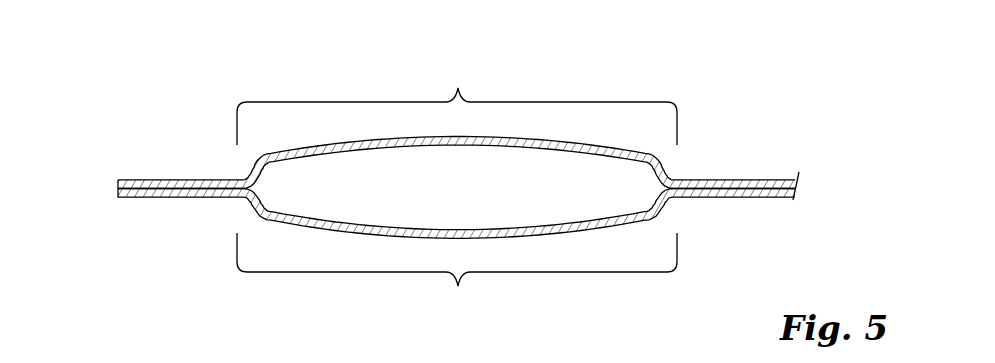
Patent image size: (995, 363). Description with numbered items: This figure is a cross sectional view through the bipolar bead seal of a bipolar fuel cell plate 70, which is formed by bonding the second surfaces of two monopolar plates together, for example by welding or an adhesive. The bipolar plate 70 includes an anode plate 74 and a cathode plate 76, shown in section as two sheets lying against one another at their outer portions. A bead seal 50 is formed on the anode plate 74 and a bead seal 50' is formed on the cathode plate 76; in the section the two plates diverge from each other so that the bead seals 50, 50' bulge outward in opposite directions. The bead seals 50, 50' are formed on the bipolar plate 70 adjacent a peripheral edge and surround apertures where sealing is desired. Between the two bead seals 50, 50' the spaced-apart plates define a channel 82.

The bipolar fuel cell plate 70 is at (167, 110).
The anode plate 74 is at (747, 181).
The cathode plate 76 is at (752, 196).
The channel 82 is at (288, 197).
The bead seal 50 is at (457, 101).
The bead seal 50' is at (457, 278).